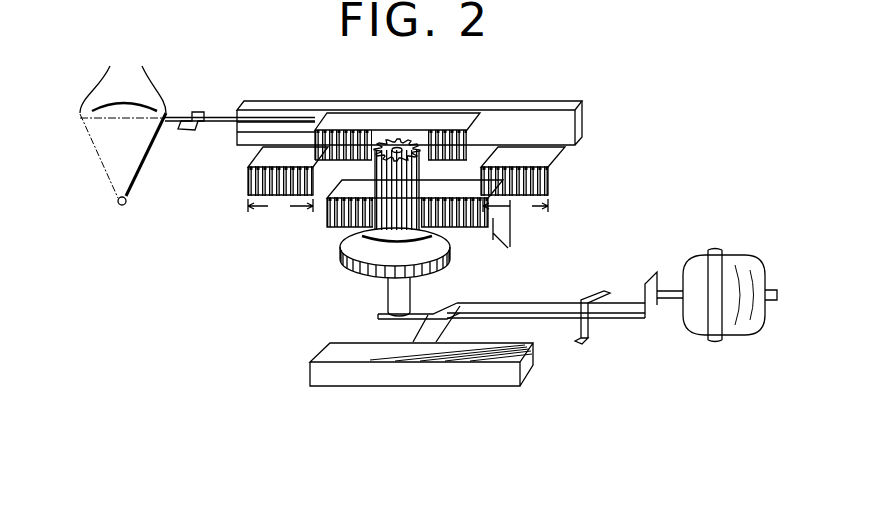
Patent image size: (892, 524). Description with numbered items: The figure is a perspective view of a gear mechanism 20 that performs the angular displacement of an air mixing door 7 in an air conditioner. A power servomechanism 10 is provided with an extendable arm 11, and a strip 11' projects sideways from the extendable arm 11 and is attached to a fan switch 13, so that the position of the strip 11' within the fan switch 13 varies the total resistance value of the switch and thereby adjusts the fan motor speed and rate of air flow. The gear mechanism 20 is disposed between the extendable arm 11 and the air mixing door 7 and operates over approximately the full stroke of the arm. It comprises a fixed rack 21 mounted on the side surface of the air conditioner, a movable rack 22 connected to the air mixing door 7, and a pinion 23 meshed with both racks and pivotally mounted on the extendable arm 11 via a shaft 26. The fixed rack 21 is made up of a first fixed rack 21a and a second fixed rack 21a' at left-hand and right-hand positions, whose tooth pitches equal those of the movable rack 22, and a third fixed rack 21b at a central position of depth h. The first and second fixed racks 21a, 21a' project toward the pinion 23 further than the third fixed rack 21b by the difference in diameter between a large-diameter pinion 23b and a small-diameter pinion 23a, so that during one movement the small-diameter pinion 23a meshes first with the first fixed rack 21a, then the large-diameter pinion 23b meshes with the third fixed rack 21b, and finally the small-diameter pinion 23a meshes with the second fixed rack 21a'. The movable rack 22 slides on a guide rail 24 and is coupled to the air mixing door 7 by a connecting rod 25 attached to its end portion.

The air mixing door 7 is at (123, 132).
The connecting rod 25 is at (221, 117).
The gear mechanism 20 is at (421, 87).
The guide rail 24 is at (571, 100).
The movable rack 22 is at (362, 112).
The fixed rack 21 is at (310, 292).
The first fixed rack 21a is at (257, 201).
The second fixed rack 21a' is at (373, 222).
The third fixed rack 21b is at (335, 218).
The pinion 23 is at (518, 258).
The small-diameter pinion 23a is at (407, 208).
The large-diameter pinion 23b is at (432, 258).
The shaft 26 is at (394, 287).
The strip 11' is at (398, 322).
The extendable arm 11 is at (565, 304).
The power servomechanism 10 is at (745, 274).
The fan switch 13 is at (520, 370).